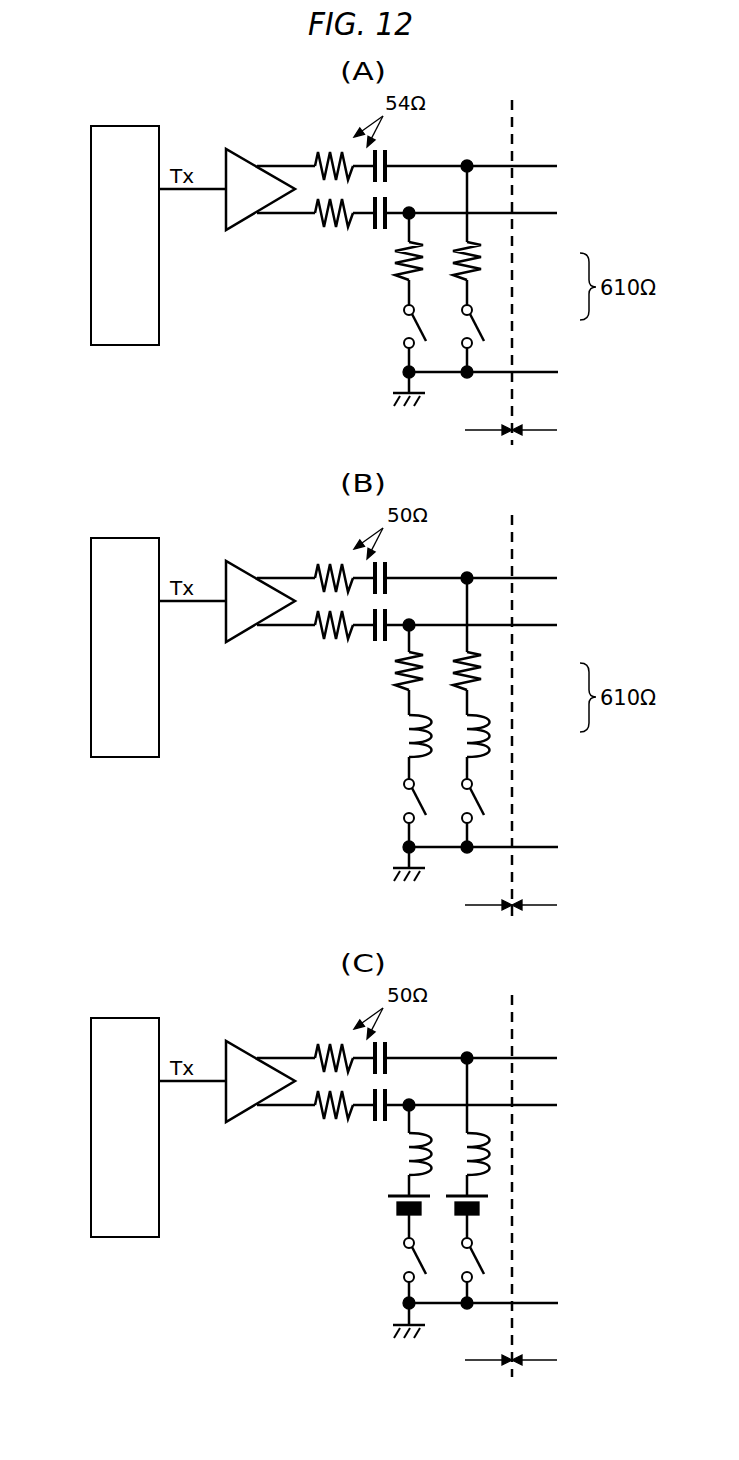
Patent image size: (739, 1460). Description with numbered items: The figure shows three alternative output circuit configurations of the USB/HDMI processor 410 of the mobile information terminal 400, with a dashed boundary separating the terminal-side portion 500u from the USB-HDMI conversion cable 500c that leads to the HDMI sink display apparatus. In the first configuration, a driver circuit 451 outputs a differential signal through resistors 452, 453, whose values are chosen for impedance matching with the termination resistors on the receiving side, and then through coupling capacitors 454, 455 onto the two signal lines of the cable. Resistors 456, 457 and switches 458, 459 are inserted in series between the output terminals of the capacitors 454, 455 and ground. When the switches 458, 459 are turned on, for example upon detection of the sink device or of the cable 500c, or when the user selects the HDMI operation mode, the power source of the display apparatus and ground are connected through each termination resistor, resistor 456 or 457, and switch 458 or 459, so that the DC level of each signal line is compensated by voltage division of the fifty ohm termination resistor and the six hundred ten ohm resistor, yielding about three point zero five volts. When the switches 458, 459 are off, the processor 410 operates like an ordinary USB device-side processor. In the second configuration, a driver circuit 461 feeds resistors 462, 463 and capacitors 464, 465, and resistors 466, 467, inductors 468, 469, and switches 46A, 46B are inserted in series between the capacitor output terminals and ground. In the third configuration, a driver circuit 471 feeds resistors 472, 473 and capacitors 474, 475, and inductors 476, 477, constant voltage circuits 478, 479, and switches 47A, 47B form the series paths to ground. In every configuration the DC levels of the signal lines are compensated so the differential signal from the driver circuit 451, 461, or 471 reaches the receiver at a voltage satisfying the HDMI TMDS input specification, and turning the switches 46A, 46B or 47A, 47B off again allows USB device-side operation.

The USB/HDMI processor 410 is at (143, 161).
The mobile information terminal 400 is at (453, 442).
The USB-side portion of the cable 500u is at (624, 409).
The USB-HDMI conversion cable 500c is at (624, 442).
The driver circuit 451 is at (260, 169).
The resistor 452 is at (323, 144).
The resistor 453 is at (324, 237).
The capacitor 454 is at (466, 155).
The capacitor 455 is at (466, 201).
The resistor 456 is at (512, 235).
The resistor 457 is at (483, 265).
The switch 458 is at (501, 338).
The switch 459 is at (388, 338).
The driver circuit 461 is at (260, 581).
The resistor 462 is at (323, 556).
The resistor 463 is at (324, 649).
The capacitor 464 is at (466, 567).
The capacitor 465 is at (466, 613).
The resistor 466 is at (512, 646).
The resistor 467 is at (483, 676).
The inductor 468 is at (519, 747).
The inductor 469 is at (490, 752).
The switch 46A is at (500, 813).
The switch 46B is at (388, 813).
The driver circuit 471 is at (260, 1061).
The resistor 472 is at (323, 1036).
The resistor 473 is at (324, 1129).
The capacitor 474 is at (466, 1047).
The capacitor 475 is at (466, 1093).
The inductor 476 is at (519, 1127).
The inductor 477 is at (490, 1156).
The constant voltage circuit 478 is at (509, 1219).
The constant voltage circuit 479 is at (367, 1219).
The switch 47A is at (500, 1270).
The switch 47B is at (388, 1270).